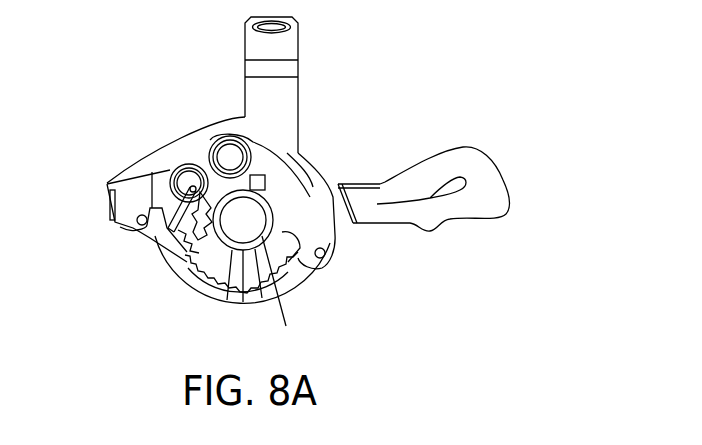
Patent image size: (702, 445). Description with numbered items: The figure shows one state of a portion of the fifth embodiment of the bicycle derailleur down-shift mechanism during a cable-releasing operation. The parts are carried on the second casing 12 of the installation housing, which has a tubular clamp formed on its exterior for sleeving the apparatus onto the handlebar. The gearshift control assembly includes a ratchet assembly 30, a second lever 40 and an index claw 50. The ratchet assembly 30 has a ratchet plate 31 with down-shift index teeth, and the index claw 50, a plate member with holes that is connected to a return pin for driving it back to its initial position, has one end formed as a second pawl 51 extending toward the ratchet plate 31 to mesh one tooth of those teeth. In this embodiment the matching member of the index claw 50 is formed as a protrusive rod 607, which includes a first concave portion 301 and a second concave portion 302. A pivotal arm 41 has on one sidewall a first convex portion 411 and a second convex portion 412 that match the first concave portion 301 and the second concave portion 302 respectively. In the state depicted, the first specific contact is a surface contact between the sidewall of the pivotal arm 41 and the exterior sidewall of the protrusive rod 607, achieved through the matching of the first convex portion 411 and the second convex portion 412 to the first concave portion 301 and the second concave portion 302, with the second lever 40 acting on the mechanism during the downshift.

The second casing 12 is at (200, 117).
The index claw 50 is at (174, 170).
The second pawl 51 is at (183, 247).
The protrusive rod 607 is at (265, 183).
The ratchet assembly 30 is at (270, 208).
The ratchet plate 31 is at (288, 266).
The first concave portion 301 is at (288, 294).
The second concave portion 302 is at (218, 266).
The second lever 40 is at (504, 281).
The pivotal arm 41 is at (336, 204).
The first convex portion 411 is at (231, 293).
The second convex portion 412 is at (208, 264).